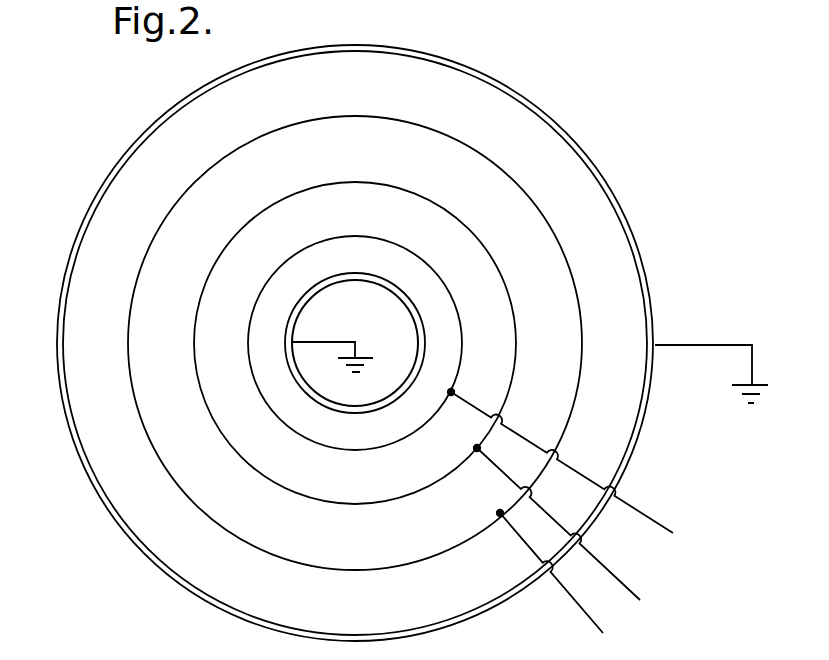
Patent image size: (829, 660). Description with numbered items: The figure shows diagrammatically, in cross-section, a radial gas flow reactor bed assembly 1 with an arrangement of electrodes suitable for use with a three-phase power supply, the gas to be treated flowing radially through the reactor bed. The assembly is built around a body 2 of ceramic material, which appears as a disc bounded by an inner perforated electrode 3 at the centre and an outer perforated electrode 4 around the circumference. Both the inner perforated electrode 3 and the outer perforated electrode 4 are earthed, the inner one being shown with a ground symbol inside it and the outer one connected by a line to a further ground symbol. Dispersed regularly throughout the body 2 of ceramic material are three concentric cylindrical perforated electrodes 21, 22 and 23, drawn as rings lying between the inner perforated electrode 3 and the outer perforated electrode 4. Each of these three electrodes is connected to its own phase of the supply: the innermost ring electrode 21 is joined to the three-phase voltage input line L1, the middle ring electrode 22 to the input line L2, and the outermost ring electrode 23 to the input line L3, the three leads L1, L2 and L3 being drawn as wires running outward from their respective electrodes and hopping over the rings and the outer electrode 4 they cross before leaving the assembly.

The radial gas flow reactor bed assembly 1 is at (575, 130).
The body of ceramic material 2 is at (588, 198).
The inner perforated electrode 3 is at (416, 320).
The outer perforated electrode 4 is at (646, 268).
The concentric cylindrical perforated electrode 21 is at (463, 343).
The concentric cylindrical perforated electrode 22 is at (516, 343).
The concentric cylindrical perforated electrode 23 is at (582, 343).
The three-phase voltage input line L1 is at (576, 473).
The three-phase voltage input line L2 is at (573, 533).
The three-phase voltage input line L3 is at (566, 583).